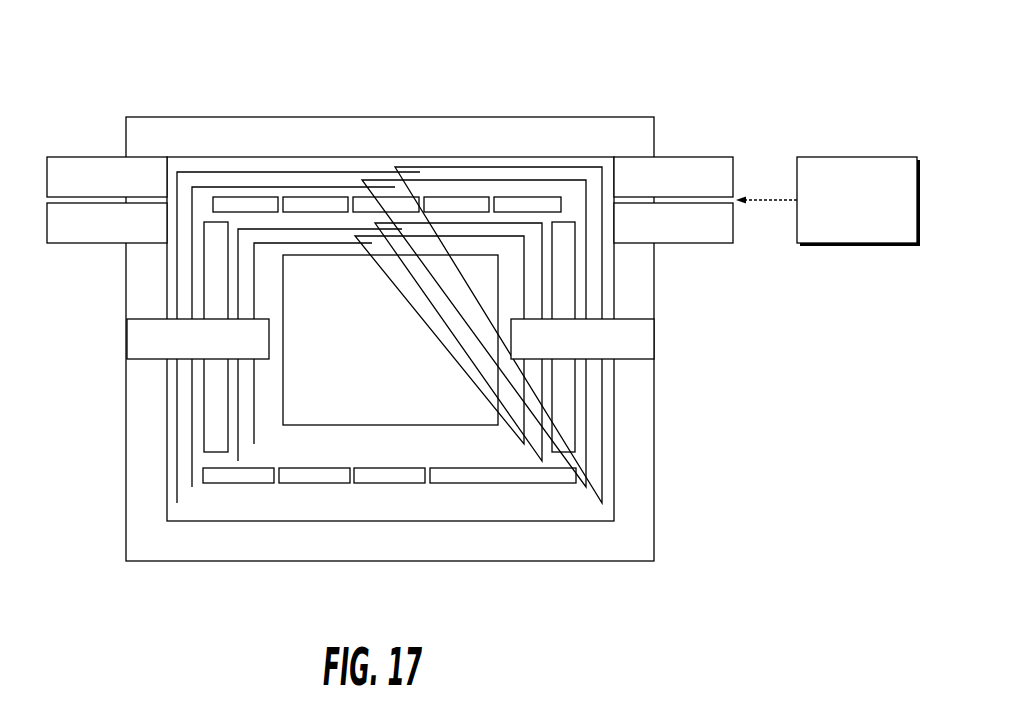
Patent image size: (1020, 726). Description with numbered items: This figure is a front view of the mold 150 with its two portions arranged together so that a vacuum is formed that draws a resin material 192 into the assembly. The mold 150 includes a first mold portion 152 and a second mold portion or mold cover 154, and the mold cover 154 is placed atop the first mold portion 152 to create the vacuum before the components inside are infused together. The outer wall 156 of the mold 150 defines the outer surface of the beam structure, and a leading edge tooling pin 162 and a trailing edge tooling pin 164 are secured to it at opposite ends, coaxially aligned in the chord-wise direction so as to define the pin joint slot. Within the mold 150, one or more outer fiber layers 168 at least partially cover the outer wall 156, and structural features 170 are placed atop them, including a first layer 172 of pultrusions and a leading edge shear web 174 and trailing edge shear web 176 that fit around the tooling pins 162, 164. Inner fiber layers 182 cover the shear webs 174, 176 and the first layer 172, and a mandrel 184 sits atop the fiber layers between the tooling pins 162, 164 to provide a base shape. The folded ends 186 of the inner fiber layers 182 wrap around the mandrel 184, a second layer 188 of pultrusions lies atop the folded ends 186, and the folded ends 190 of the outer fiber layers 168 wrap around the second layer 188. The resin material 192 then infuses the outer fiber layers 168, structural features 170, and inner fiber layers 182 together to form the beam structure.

The mold 150 is at (770, 383).
The first mold portion 152 is at (124, 506).
The mold cover 154 is at (87, 153).
The outer wall 156 is at (143, 468).
The leading edge tooling pin 162 is at (195, 339).
The trailing edge tooling pin 164 is at (559, 348).
The outer fiber layers 168 is at (190, 293).
The structural features 170 is at (463, 253).
The first layer of pultrusions 172 is at (319, 481).
The leading edge shear web 174 is at (213, 401).
The trailing edge shear web 176 is at (565, 438).
The inner fiber layers 182 is at (463, 447).
The mandrel 184 is at (433, 253).
The folded ends of the inner fiber layers 186 is at (323, 243).
The second layer of pultrusions 188 is at (397, 197).
The folded ends of the outer fiber layers 190 is at (240, 187).
The resin material 192 is at (843, 155).